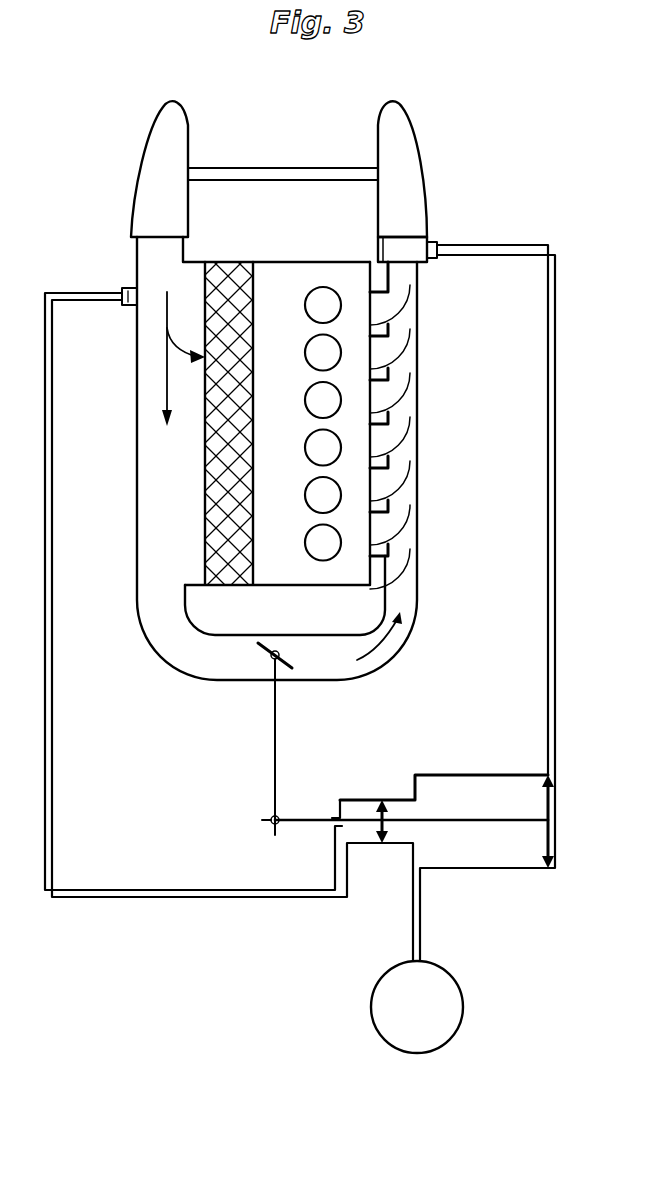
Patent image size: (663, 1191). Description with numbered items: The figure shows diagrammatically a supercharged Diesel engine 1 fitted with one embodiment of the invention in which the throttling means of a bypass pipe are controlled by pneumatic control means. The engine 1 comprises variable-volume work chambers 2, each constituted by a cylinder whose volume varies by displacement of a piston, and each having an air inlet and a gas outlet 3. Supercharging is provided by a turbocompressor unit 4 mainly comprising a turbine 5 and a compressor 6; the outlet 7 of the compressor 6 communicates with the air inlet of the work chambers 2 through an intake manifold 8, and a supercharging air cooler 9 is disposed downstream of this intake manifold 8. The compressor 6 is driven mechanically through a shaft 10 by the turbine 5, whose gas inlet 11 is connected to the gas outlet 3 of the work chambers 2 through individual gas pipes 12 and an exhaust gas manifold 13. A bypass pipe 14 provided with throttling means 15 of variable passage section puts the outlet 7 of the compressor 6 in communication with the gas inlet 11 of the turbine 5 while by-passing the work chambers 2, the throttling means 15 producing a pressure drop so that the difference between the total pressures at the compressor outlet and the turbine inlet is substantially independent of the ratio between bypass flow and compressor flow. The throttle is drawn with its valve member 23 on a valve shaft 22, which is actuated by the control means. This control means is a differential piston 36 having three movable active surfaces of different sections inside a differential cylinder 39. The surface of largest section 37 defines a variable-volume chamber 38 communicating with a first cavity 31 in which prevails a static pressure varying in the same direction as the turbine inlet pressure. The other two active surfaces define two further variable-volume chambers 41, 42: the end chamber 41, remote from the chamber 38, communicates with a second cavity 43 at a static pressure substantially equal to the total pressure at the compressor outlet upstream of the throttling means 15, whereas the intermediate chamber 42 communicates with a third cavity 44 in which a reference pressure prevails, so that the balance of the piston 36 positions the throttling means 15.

The supercharged Diesel engine 1 is at (277, 464).
The variable-volume work chambers 2 is at (310, 345).
The gas outlet 3 is at (370, 350).
The turbocompressor unit 4 is at (325, 152).
The turbine 5 is at (413, 151).
The compressor 6 is at (158, 147).
The outlet of the compressor 7 is at (150, 238).
The intake manifold 8 is at (140, 442).
The supercharging air cooler 9 is at (243, 462).
The shaft 10 is at (275, 183).
The gas inlet of the turbine 11 is at (420, 270).
The individual gas pipes 12 is at (394, 437).
The exhaust gas manifold 13 is at (410, 493).
The bypass pipe 14 is at (216, 665).
The throttling means 15 is at (298, 694).
The valve shaft 22 is at (268, 658).
The throttle valve 23 is at (282, 652).
The first cavity 31 is at (436, 244).
The differential piston 36 is at (437, 808).
The active surface of largest section 37 is at (488, 802).
The variable-volume chamber 38 is at (530, 862).
The differential cylinder 39 is at (487, 870).
The variable-volume chamber 41 is at (357, 806).
The variable-volume chamber 42 is at (453, 858).
The second cavity 43 is at (130, 305).
The third cavity 44 is at (458, 1012).